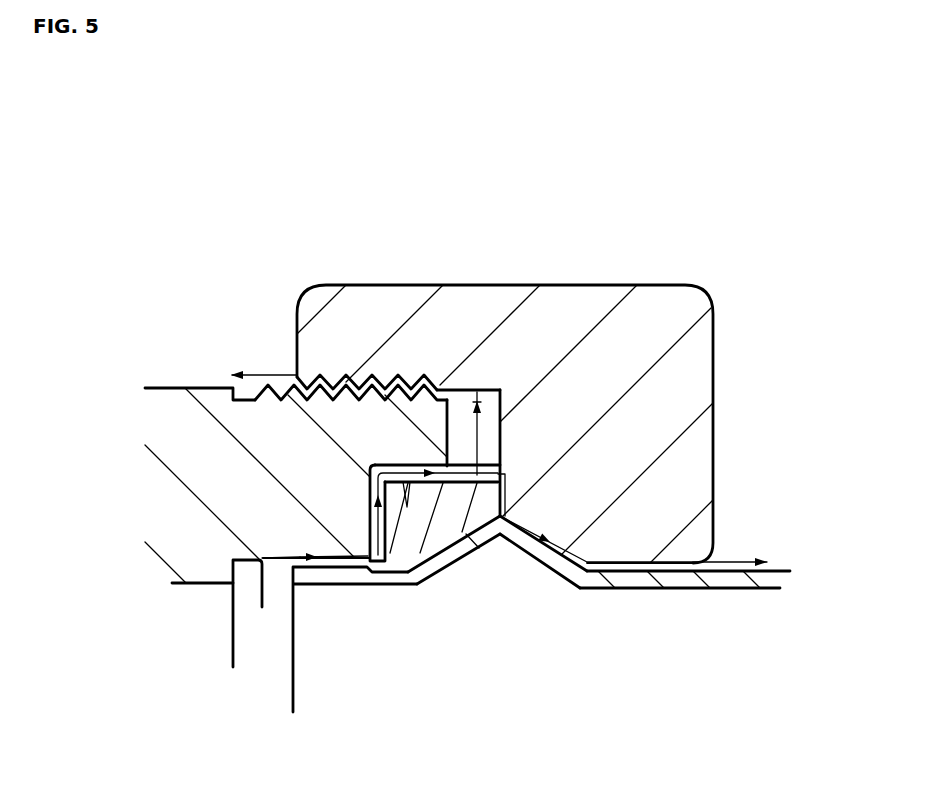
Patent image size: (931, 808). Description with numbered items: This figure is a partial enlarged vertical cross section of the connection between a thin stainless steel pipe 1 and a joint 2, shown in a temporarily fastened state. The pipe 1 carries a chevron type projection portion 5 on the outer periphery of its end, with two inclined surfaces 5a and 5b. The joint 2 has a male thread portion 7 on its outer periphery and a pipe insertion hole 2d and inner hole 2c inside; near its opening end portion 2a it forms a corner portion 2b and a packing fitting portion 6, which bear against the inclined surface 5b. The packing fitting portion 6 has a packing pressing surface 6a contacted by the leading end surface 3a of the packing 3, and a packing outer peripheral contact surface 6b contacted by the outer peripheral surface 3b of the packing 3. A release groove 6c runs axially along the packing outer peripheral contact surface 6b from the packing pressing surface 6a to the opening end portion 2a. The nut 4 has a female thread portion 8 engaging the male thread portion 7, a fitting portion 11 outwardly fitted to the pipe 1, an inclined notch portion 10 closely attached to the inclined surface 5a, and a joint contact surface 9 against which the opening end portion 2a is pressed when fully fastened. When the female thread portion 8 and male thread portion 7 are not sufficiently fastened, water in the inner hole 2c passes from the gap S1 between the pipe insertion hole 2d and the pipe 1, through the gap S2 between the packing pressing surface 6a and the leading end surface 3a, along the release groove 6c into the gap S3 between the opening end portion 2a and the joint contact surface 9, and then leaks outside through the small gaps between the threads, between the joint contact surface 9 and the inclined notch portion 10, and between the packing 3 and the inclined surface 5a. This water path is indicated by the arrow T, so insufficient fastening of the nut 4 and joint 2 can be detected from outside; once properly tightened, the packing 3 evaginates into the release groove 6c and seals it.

The thin stainless steel pipe 1 is at (780, 570).
The joint 2 is at (167, 385).
The opening end portion 2a is at (468, 402).
The corner portion 2b is at (368, 570).
The inner hole 2c is at (184, 583).
The pipe insertion hole 2d is at (245, 588).
The packing 3 is at (415, 530).
The leading end surface 3a is at (387, 567).
The outer peripheral surface 3b is at (500, 478).
The nut 4 is at (497, 270).
The chevron type projection portion 5 is at (497, 650).
The inclined surface 5a is at (542, 557).
The inclined surface 5b is at (480, 583).
The packing fitting portion 6 is at (280, 378).
The packing pressing surface 6a is at (370, 530).
The packing outer peripheral contact surface 6b is at (460, 395).
The release groove 6c is at (373, 470).
The male thread portion 7 is at (281, 383).
The female thread portion 8 is at (343, 377).
The joint contact surface 9 is at (490, 440).
The inclined notch portion 10 is at (563, 553).
The fitting portion 11 is at (670, 323).
The gap S1 is at (323, 567).
The gap S2 is at (372, 490).
The gap S3 is at (488, 432).
The arrow T is at (262, 368).